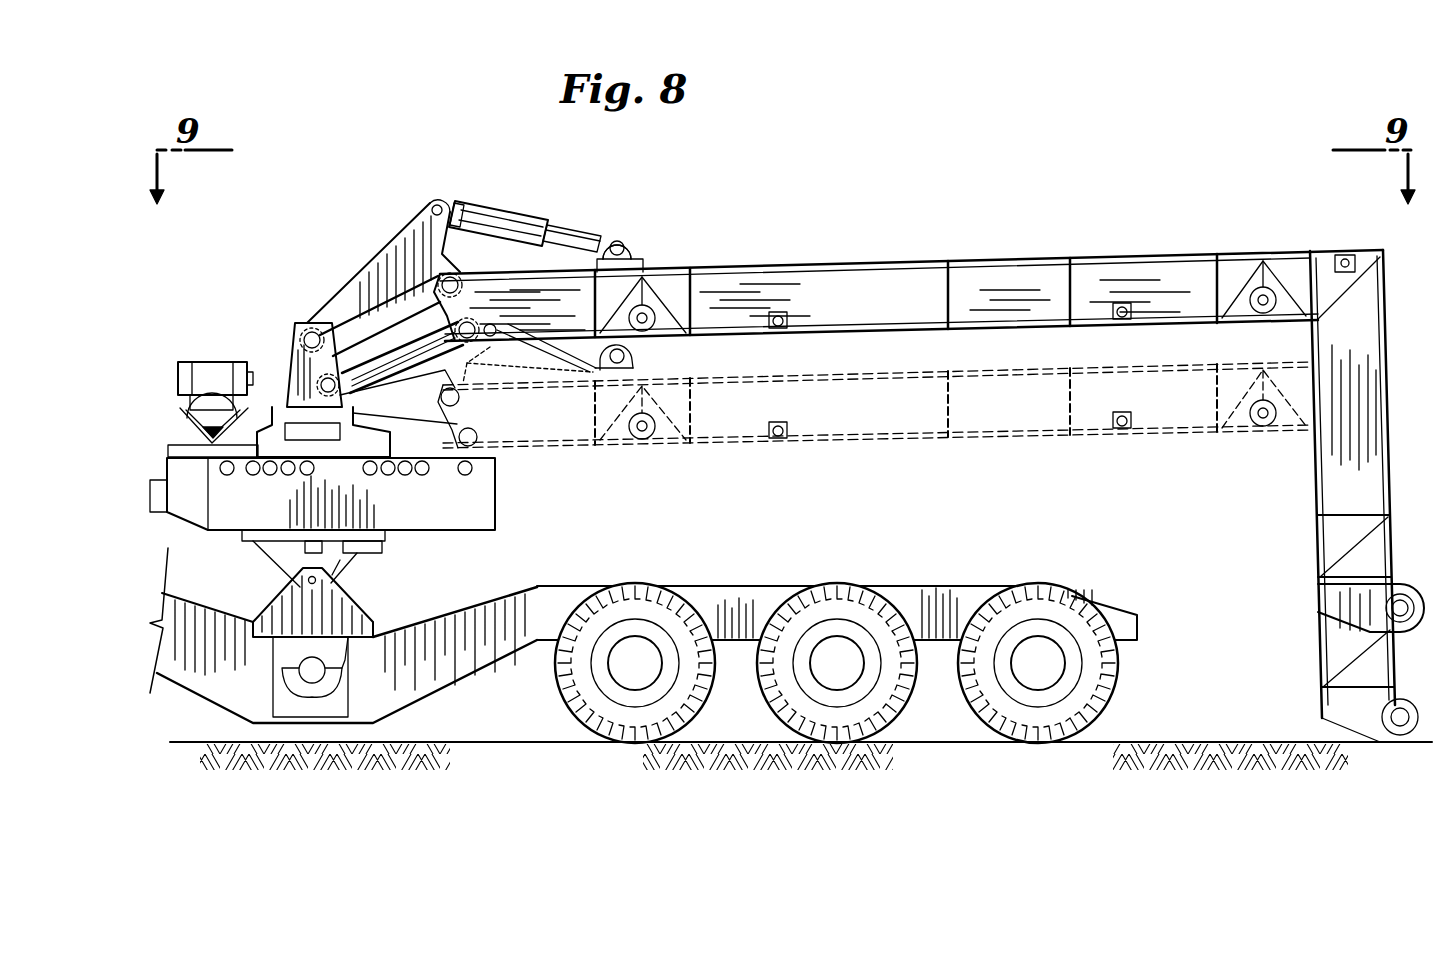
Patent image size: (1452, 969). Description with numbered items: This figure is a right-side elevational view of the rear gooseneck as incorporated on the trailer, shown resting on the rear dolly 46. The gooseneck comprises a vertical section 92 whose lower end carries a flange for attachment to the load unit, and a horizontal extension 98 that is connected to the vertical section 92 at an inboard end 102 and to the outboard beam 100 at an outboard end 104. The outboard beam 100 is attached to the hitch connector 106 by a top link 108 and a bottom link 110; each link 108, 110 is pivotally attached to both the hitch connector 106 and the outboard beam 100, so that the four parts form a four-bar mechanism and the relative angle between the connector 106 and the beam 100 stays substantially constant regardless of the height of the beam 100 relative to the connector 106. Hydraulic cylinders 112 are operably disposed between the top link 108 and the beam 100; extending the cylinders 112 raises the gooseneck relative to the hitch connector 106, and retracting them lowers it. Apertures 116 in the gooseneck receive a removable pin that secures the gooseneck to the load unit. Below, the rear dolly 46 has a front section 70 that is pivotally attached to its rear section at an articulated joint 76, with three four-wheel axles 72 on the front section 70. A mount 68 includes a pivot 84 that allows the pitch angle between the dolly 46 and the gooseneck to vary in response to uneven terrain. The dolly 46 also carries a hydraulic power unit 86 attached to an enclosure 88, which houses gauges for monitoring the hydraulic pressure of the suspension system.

The rear dolly 46 is at (453, 670).
The mount 68 is at (343, 612).
The front section 70 is at (943, 585).
The axles 72 is at (675, 702).
The articulated joint 76 is at (308, 670).
The pivot 84 is at (308, 580).
The hydraulic power unit 86 is at (212, 368).
The enclosure 88 is at (498, 492).
The vertical section 92 is at (1388, 395).
The horizontal extension 98 is at (1118, 256).
The outboard beam 100 is at (764, 262).
The inboard end 102 is at (1212, 256).
The outboard end 104 is at (947, 263).
The hitch connector 106 is at (297, 357).
The top link 108 is at (412, 231).
The bottom link 110 is at (413, 343).
The hydraulic cylinders 112 is at (503, 218).
The apertures 116 is at (1398, 608).